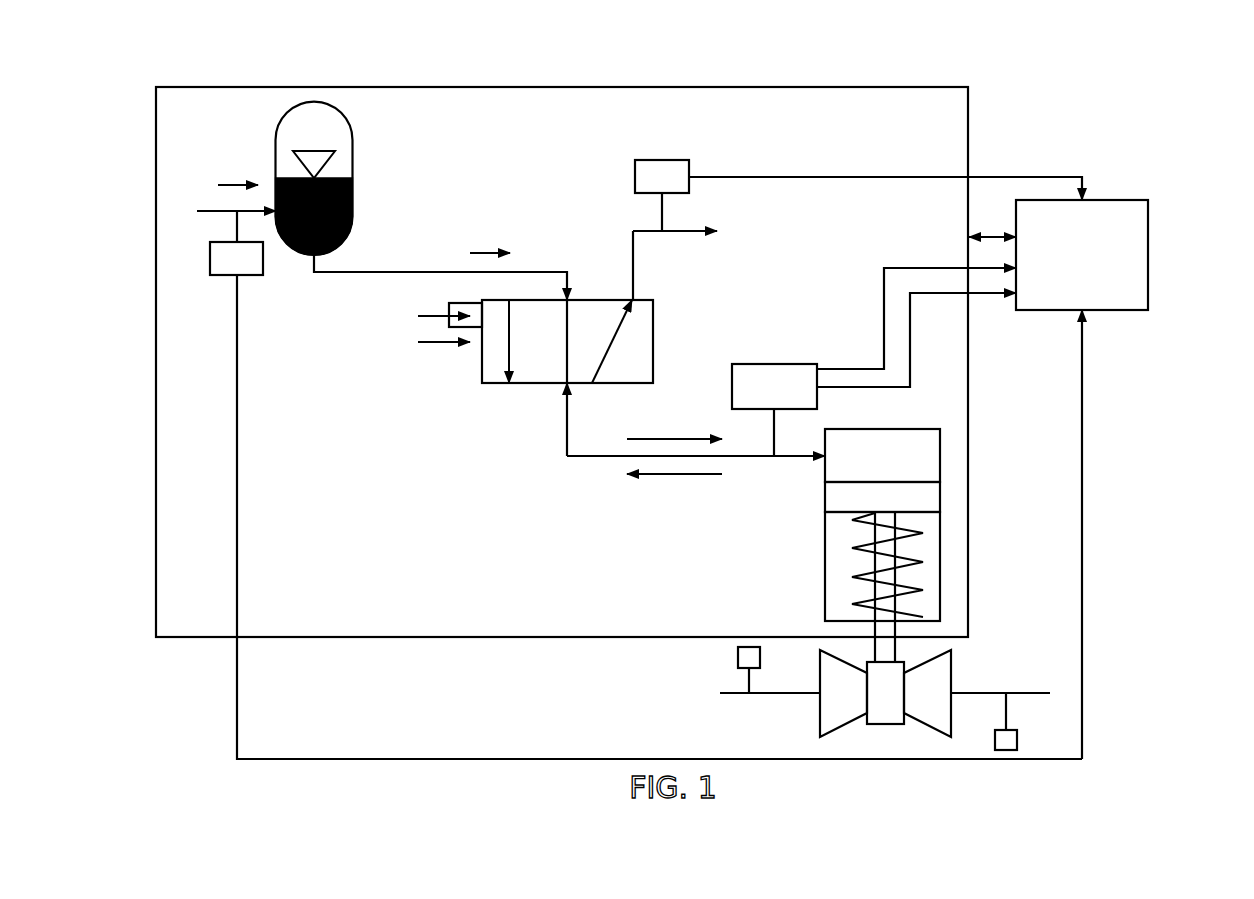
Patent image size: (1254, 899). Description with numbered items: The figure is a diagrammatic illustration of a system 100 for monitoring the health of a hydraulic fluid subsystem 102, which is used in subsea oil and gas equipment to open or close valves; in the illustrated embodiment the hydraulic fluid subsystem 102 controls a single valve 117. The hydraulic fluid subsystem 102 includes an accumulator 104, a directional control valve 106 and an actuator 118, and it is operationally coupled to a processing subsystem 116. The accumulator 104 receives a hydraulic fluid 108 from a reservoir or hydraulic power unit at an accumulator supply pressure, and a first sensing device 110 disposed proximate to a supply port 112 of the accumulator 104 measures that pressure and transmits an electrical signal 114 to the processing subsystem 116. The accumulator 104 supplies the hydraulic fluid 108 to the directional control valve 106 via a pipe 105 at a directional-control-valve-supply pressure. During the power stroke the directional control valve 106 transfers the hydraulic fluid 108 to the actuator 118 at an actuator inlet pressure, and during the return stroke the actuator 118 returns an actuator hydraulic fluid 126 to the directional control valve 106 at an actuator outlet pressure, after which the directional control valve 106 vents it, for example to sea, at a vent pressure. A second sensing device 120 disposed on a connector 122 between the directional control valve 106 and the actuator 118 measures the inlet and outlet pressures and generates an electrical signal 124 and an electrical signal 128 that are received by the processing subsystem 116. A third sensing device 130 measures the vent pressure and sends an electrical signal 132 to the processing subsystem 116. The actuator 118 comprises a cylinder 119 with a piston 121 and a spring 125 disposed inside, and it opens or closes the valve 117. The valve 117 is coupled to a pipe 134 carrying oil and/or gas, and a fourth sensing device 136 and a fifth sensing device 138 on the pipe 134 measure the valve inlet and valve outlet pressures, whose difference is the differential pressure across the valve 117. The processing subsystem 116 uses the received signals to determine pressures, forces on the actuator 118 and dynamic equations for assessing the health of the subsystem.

The system 100 is at (1150, 63).
The hydraulic fluid subsystem 102 is at (908, 85).
The accumulator 104 is at (353, 158).
The pipe 105 is at (412, 270).
The directional control valve 106 is at (587, 298).
The hydraulic fluid 108 is at (228, 180).
The first sensing device 110 is at (220, 278).
The supply port 112 is at (258, 208).
The electrical signal 114 is at (412, 757).
The processing subsystem 116 is at (1129, 198).
The valve 117 is at (953, 673).
The actuator 118 is at (940, 448).
The cylinder 119 is at (823, 578).
The second sensing device 120 is at (762, 362).
The piston 121 is at (923, 498).
The connector 122 is at (795, 460).
The electrical signal 124 is at (912, 318).
The spring 125 is at (912, 582).
The actuator hydraulic fluid 126 is at (673, 477).
The electrical signal 128 is at (883, 297).
The third sensing device 130 is at (672, 157).
The electrical signal 132 is at (1028, 175).
The pipe 134 is at (787, 697).
The fourth sensing device 136 is at (737, 655).
The fifth sensing device 138 is at (1017, 738).